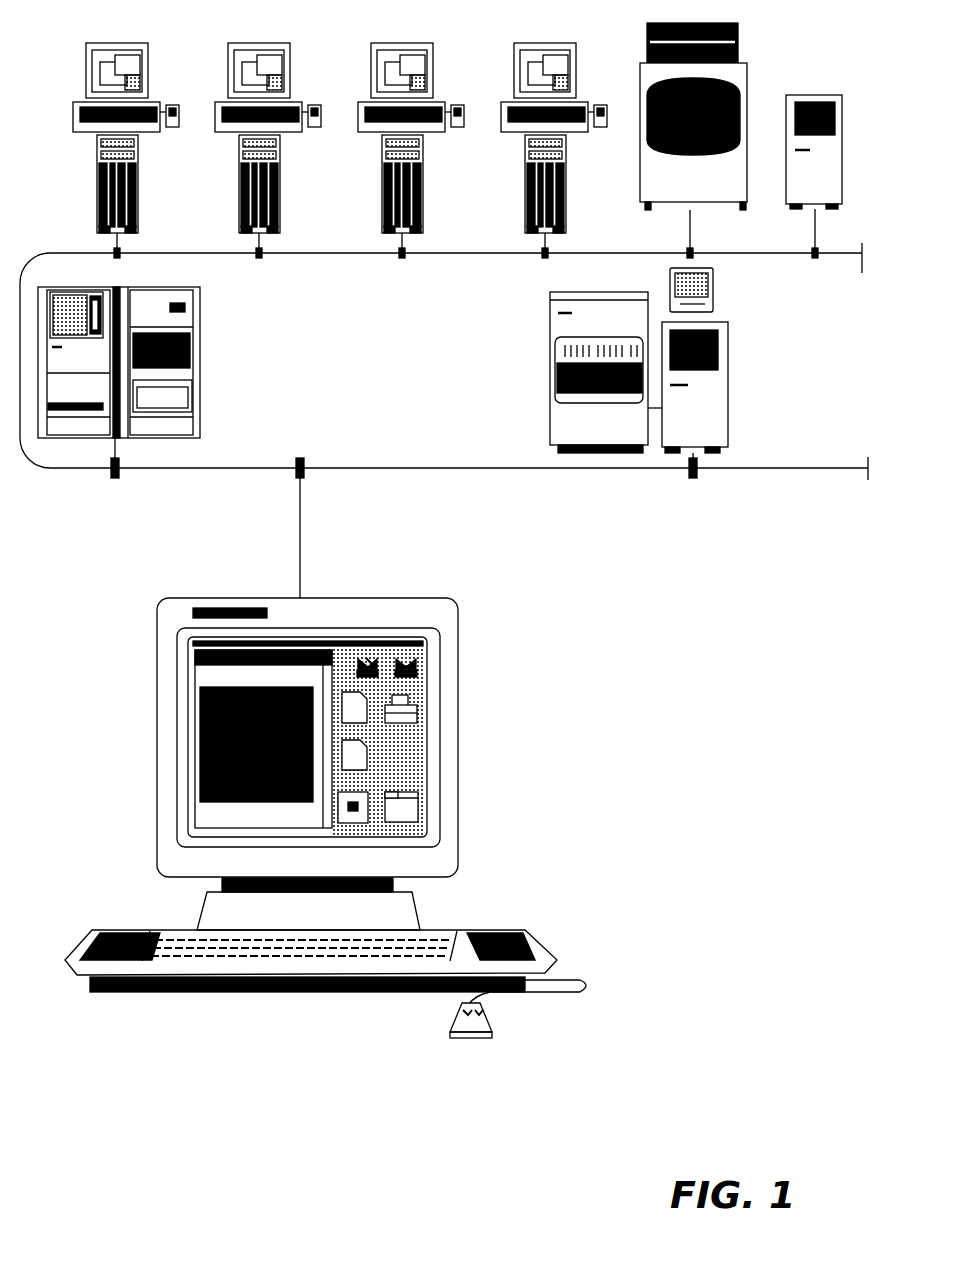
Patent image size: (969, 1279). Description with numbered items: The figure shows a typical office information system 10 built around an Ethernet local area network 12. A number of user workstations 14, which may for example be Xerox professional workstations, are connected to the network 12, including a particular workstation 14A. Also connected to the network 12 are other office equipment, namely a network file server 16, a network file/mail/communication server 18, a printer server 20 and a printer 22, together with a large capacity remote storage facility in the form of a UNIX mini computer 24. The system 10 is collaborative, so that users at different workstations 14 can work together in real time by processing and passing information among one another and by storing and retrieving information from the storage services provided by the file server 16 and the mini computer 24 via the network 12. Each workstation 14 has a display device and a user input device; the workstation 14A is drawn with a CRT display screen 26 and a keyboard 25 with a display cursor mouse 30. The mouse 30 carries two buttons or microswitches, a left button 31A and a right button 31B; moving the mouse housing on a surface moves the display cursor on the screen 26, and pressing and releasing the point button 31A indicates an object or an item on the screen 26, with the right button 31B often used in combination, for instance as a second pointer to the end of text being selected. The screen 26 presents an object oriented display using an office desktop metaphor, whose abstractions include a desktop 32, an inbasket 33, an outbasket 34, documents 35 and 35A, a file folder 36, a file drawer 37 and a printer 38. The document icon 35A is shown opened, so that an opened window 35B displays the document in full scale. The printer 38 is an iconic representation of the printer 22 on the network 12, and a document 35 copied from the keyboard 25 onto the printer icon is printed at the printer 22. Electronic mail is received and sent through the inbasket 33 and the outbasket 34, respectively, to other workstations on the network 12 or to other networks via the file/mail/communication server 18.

The office information system 10 is at (438, 420).
The Ethernet local area network 12 is at (78, 253).
The user workstations 14 is at (228, 73).
The workstation 14A is at (218, 598).
The network file server 16 is at (735, 42).
The network file/mail/communication server 18 is at (843, 128).
The printer server 20 is at (728, 332).
The printer 22 is at (548, 332).
The UNIX mini computer 24 is at (200, 305).
The keyboard 25 is at (143, 930).
The CRT display screen 26 is at (210, 745).
The display cursor mouse 30 is at (481, 1038).
The left button 31A is at (465, 1012).
The right button 31B is at (485, 1012).
The desktop 32 is at (344, 670).
The inbasket 33 is at (373, 657).
The outbasket 34 is at (413, 658).
The document 35 is at (367, 702).
The document icon 35A is at (360, 763).
The opened window 35B is at (222, 812).
The file folder 36 is at (418, 822).
The file drawer 37 is at (368, 823).
The printer icon 38 is at (418, 703).